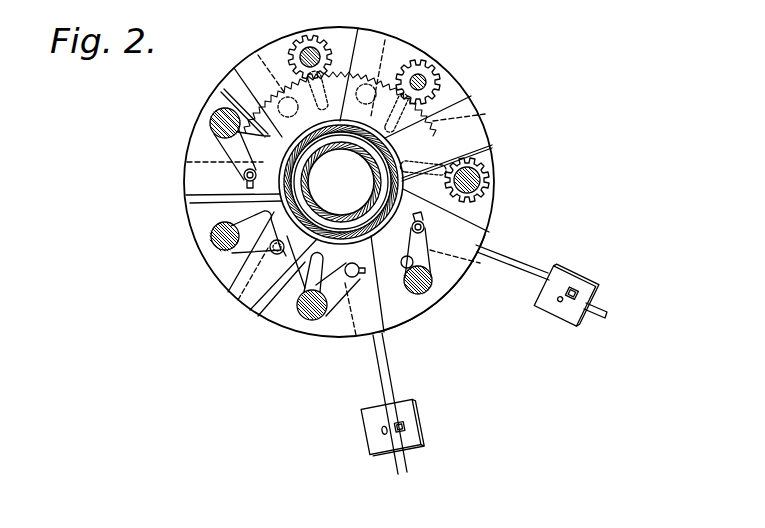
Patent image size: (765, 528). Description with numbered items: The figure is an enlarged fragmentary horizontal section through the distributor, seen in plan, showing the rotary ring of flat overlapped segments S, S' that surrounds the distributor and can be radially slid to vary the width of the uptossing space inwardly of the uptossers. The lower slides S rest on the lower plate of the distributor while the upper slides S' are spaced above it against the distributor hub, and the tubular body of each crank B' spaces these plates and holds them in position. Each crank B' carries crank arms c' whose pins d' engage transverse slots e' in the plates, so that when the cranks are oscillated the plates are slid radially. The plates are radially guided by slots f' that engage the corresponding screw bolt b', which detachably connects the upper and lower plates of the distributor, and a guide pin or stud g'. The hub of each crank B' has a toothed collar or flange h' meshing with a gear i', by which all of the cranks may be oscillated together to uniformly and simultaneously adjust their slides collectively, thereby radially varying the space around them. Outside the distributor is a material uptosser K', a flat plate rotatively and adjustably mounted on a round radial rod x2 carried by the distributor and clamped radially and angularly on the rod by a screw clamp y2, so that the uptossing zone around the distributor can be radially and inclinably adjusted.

The overlapped segments S is at (339, 182).
The overlapped segments S' is at (432, 288).
The gear i' is at (448, 96).
The toothed collar or flange h' is at (484, 180).
The crank B' is at (219, 232).
The crank arms c' is at (229, 260).
The pins d' is at (237, 264).
The transverse slots e' is at (278, 288).
The slots f' is at (297, 305).
The guide pin or stud g' is at (331, 312).
The bolt b' is at (440, 259).
The uptosser K' is at (566, 286).
The screw clamp y2 is at (592, 300).
The round radial rod x2 is at (607, 318).